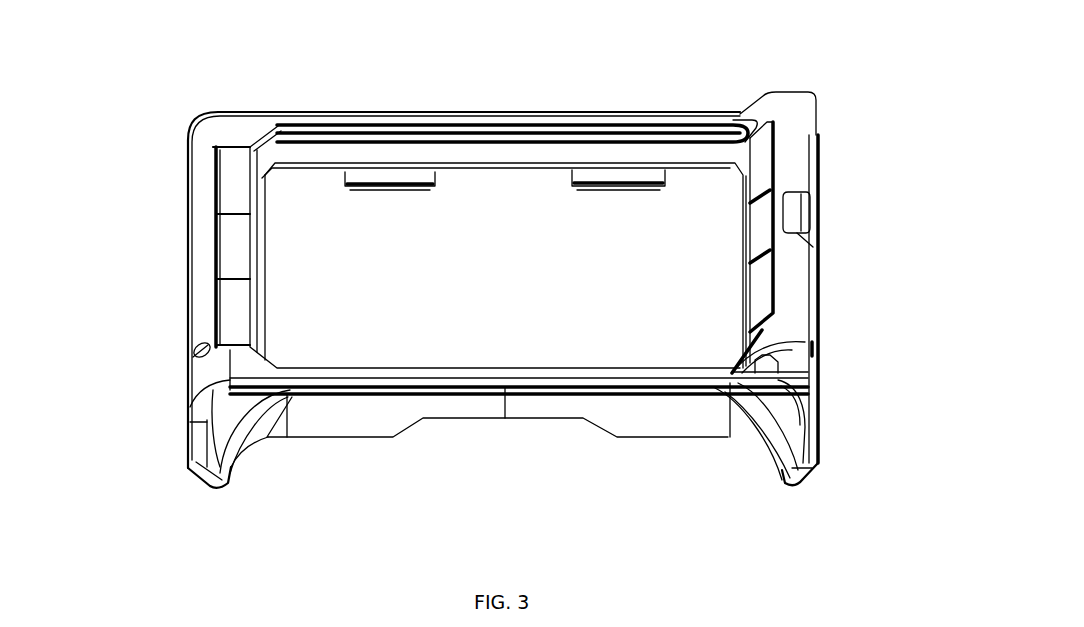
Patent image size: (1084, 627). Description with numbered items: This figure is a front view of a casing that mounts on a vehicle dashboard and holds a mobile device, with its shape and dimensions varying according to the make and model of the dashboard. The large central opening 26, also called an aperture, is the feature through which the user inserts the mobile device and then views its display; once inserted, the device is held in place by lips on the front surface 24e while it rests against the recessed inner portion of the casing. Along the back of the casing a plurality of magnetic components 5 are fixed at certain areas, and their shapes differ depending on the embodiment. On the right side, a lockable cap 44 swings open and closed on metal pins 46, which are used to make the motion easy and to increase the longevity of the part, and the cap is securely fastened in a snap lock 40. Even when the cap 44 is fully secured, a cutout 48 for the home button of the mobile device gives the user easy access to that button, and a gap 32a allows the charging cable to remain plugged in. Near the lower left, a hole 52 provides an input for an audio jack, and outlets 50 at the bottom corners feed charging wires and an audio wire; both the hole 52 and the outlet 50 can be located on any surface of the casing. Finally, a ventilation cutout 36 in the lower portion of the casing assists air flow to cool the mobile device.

The front surface 24e is at (238, 172).
The magnetic components 5 is at (388, 177).
The metal pins 46 is at (737, 135).
The cutout 48 is at (752, 228).
The lockable cap 44 is at (798, 128).
The gap 32a is at (798, 216).
The opening 26 is at (350, 281).
The snap lock 40 is at (818, 347).
The hole 52 is at (208, 345).
The outlet 50 is at (213, 473).
The ventilation cutout 36 is at (543, 427).